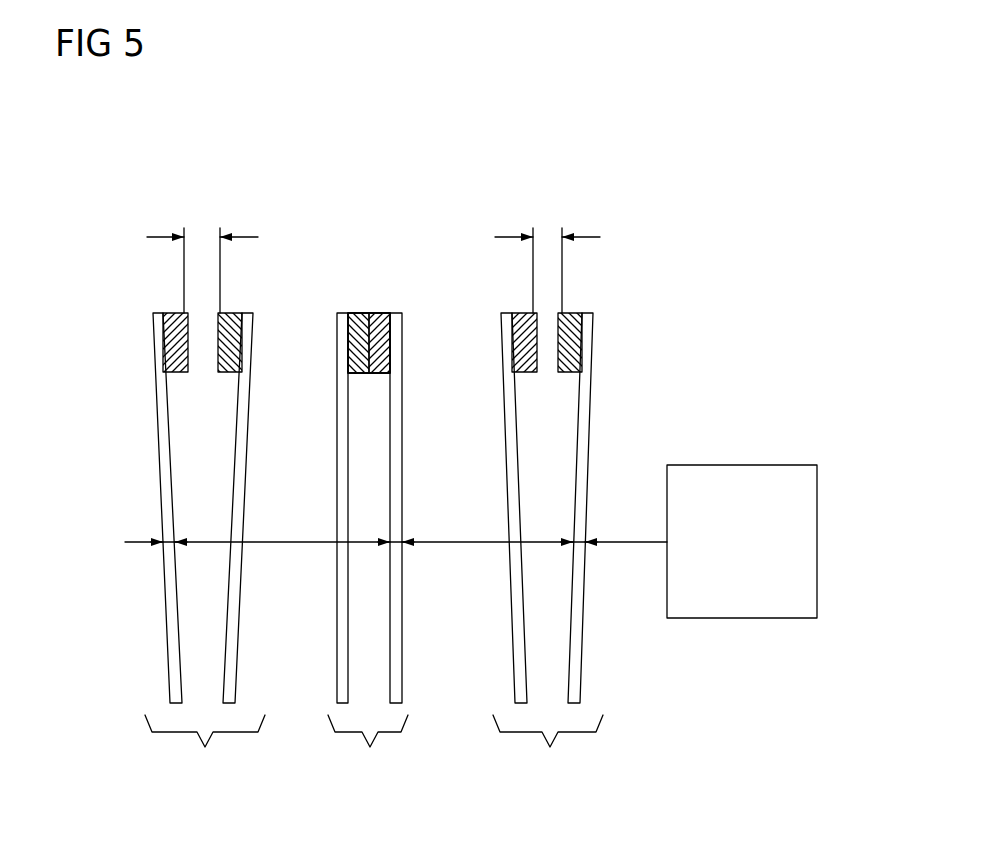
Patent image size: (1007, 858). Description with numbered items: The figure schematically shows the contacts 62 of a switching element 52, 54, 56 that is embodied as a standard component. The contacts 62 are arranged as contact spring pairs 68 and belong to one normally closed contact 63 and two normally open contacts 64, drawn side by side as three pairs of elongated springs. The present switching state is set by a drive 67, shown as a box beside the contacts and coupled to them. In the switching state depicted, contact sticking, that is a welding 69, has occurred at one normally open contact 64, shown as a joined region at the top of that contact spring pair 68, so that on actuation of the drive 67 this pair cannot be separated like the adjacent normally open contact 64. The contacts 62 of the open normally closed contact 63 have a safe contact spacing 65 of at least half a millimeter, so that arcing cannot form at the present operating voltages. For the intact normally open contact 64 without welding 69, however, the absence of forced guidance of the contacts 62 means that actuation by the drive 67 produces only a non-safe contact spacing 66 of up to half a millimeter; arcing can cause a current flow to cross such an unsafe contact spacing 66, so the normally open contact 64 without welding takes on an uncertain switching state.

The switching element 52 is at (51, 375).
The switching element 54 is at (51, 411).
The switching element 56 is at (51, 447).
The contact 62 is at (237, 593).
The normally closed contact 63 is at (205, 768).
The normally open contact 64 is at (465, 768).
The safe contact spacing 65 is at (203, 237).
The non-safe contact spacing 66 is at (552, 237).
The drive 67 is at (742, 465).
The contact spring pair 68 is at (374, 768).
The welding 69 is at (370, 313).